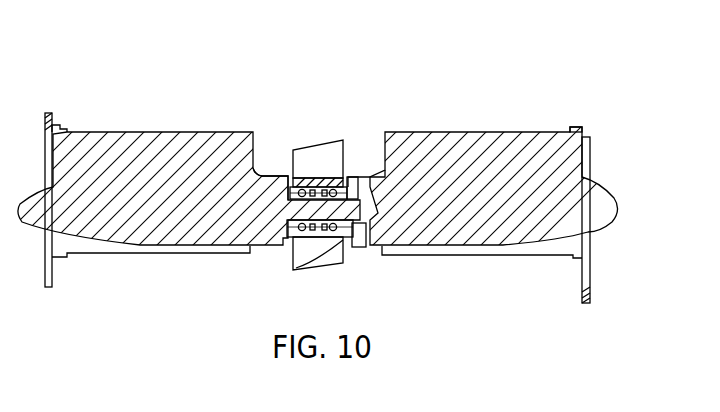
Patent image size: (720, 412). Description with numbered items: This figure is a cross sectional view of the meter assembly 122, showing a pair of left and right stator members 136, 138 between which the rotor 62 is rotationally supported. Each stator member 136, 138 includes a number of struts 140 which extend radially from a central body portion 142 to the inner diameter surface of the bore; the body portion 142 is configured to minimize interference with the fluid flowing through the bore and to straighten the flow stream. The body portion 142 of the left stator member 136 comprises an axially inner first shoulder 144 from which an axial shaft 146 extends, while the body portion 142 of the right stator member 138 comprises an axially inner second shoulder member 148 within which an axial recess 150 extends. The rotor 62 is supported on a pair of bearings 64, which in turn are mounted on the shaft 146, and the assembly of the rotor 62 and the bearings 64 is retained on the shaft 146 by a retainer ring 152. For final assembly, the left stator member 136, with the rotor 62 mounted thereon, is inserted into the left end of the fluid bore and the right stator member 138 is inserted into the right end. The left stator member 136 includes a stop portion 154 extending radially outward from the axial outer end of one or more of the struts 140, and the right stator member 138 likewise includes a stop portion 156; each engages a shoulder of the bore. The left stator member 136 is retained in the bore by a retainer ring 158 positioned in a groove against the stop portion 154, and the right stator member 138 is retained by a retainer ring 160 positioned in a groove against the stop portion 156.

The meter assembly 122 is at (536, 73).
The left stator member 136 is at (182, 132).
The right stator member 138 is at (480, 126).
The struts 140 is at (112, 138).
The body portion 142 is at (28, 218).
The first shoulder 144 is at (280, 175).
The axial shaft 146 is at (313, 187).
The second shoulder member 148 is at (363, 177).
The axial recess 150 is at (352, 247).
The retainer ring 152 is at (350, 238).
The stop portion 154 is at (58, 124).
The stop portion 156 is at (575, 125).
The retainer ring 158 is at (46, 120).
The retainer ring 160 is at (592, 138).
The rotor 62 is at (332, 140).
The bearings 64 is at (305, 248).